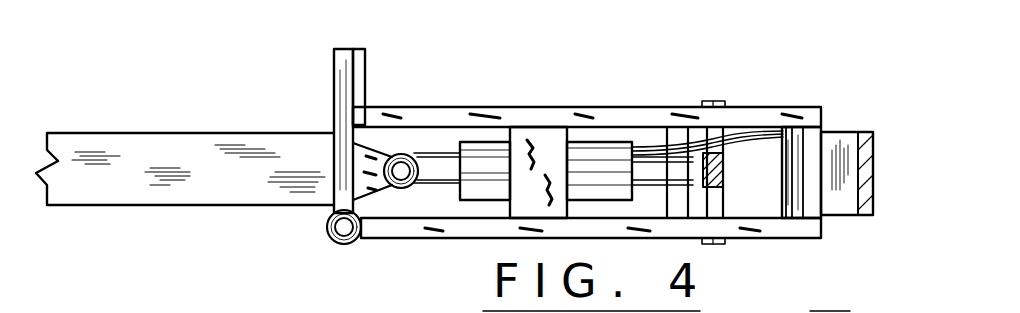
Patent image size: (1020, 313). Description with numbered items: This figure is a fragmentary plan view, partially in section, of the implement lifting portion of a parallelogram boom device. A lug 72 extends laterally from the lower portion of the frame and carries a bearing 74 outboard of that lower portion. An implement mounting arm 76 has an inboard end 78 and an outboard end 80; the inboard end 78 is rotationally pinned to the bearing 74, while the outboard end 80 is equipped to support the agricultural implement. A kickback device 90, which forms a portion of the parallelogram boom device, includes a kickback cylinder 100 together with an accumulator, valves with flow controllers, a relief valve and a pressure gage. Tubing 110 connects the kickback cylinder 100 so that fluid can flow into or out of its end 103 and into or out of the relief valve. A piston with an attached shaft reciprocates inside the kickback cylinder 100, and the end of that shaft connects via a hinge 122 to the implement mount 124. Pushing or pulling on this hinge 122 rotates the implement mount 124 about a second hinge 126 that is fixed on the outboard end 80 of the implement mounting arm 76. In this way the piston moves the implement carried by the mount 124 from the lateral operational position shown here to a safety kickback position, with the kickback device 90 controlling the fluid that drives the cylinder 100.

The lug 72 is at (875, 163).
The bearing 74 is at (787, 173).
The implement mounting arm 76 is at (573, 105).
The inboard end 78 is at (798, 113).
The outboard end 80 is at (378, 107).
The kickback device 90 is at (477, 141).
The kickback cylinder 100 is at (455, 183).
The end of kickback cylinder 103 is at (618, 165).
The tubing 110 is at (738, 135).
The hinge 122 is at (365, 154).
The implement mount 124 is at (136, 123).
The hinge 126 is at (344, 246).